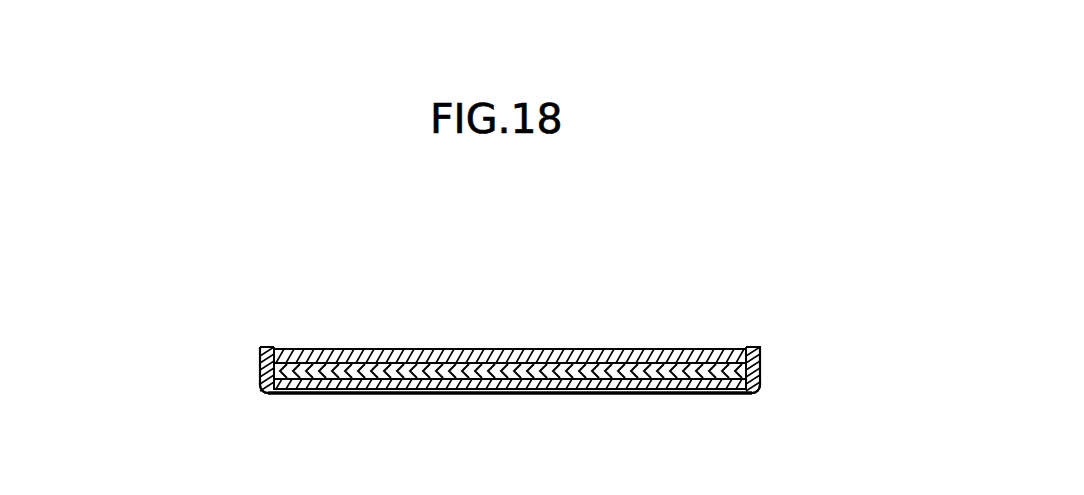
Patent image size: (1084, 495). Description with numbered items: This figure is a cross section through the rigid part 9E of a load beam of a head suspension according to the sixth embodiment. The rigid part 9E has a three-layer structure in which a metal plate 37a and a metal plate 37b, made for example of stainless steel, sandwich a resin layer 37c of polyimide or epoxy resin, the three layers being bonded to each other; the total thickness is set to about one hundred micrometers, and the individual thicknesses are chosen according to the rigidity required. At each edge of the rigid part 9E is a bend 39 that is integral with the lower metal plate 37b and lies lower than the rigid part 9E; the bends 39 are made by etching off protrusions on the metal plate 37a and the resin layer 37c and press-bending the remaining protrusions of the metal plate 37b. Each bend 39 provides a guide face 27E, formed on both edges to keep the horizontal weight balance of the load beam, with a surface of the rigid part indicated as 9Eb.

The rigid part 9E is at (259, 350).
The tray top surface 9Eb is at (653, 348).
The bend 39 is at (760, 352).
The guide face 27E is at (262, 394).
The metal plate 37a is at (398, 348).
The metal plate 37b is at (478, 394).
The resin layer 37c is at (484, 360).